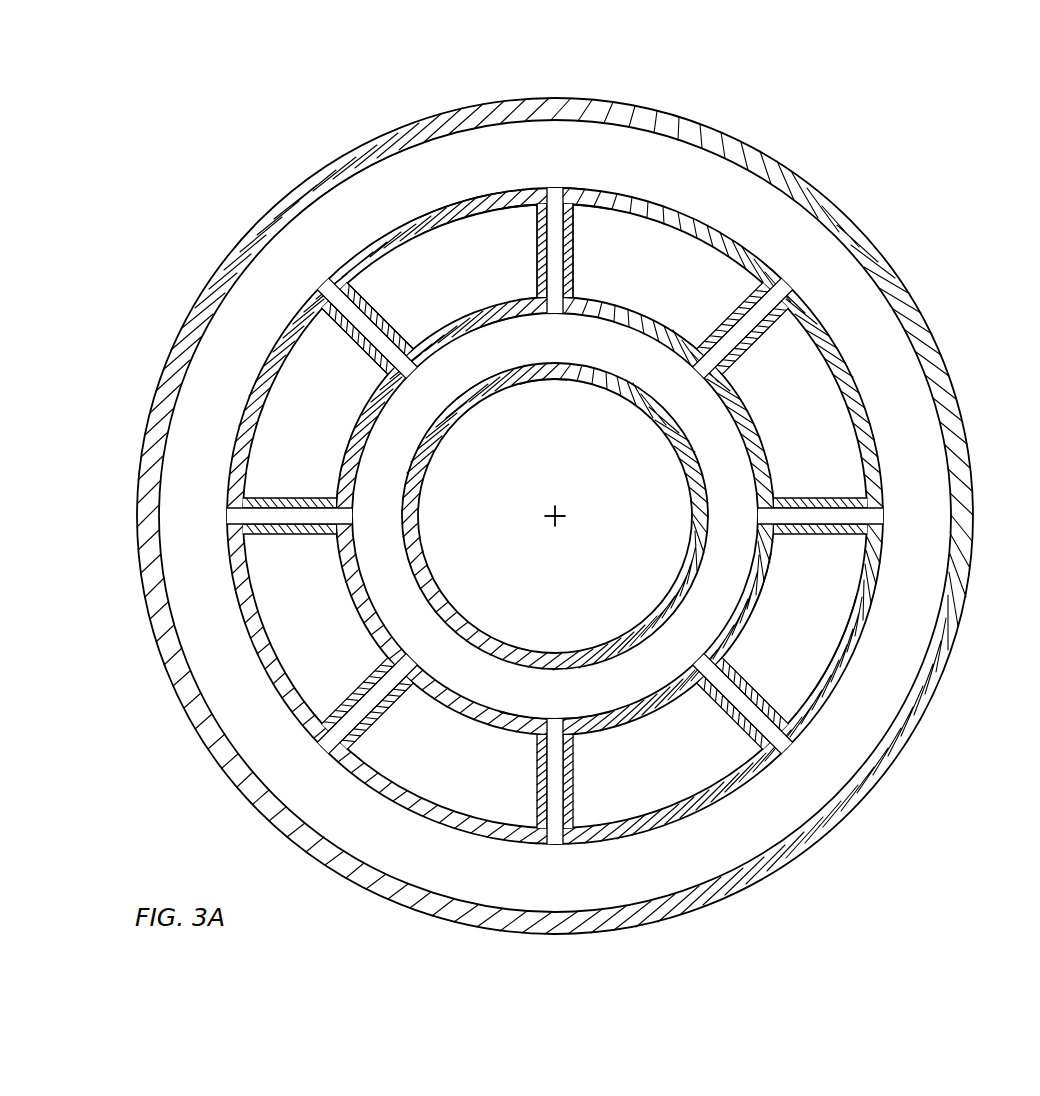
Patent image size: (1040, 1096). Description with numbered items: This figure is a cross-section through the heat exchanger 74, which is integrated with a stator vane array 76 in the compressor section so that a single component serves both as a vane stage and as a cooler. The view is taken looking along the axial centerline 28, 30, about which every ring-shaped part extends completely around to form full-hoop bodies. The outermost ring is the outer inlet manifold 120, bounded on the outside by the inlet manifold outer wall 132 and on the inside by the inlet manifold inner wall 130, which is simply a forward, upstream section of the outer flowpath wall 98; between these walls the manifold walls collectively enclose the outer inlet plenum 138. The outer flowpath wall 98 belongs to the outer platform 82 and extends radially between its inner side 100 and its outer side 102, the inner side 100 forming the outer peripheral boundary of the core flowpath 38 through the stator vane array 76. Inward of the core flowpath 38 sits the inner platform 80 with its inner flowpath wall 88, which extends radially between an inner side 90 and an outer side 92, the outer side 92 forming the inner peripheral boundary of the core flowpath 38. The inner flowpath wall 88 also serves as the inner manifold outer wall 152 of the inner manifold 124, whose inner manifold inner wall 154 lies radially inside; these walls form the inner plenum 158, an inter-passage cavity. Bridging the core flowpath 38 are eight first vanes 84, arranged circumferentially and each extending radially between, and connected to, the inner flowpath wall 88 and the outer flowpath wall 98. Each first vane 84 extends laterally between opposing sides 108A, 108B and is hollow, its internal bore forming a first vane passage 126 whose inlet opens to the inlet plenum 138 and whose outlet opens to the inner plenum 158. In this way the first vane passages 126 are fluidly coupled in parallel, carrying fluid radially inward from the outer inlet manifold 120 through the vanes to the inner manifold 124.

The heat exchanger 74 is at (588, 474).
The outer inlet manifold 120 is at (588, 474).
The inlet manifold outer wall 132 is at (948, 640).
The outer platform 82 is at (603, 450).
The stator vane array 76 is at (848, 340).
The outer flowpath wall 98 is at (457, 200).
The outer side of the outer flowpath wall 102 is at (498, 205).
The inner side of the outer flowpath wall 100 is at (468, 270).
The outer inlet plenum 138 is at (366, 211).
The core flowpath 38 is at (474, 292).
The inlet manifold inner wall 130 is at (855, 628).
The inner platform 80 is at (635, 516).
The inner plenum 158 is at (540, 706).
The inner manifold outer wall 152 is at (770, 562).
The inner flowpath wall 88 is at (503, 345).
The first vanes 84 is at (555, 516).
The outer side of the inner flowpath wall 92 is at (378, 290).
The first vane side 108A is at (536, 235).
The first vane side 108B is at (573, 233).
The first vane passages 126 is at (557, 200).
The inner manifold inner wall 154 is at (555, 516).
The inner side of the inner flowpath wall 90 is at (470, 388).
The inner manifold 124 is at (546, 378).
The axial centerline 28 is at (556, 522).
The centerline 30 is at (555, 516).